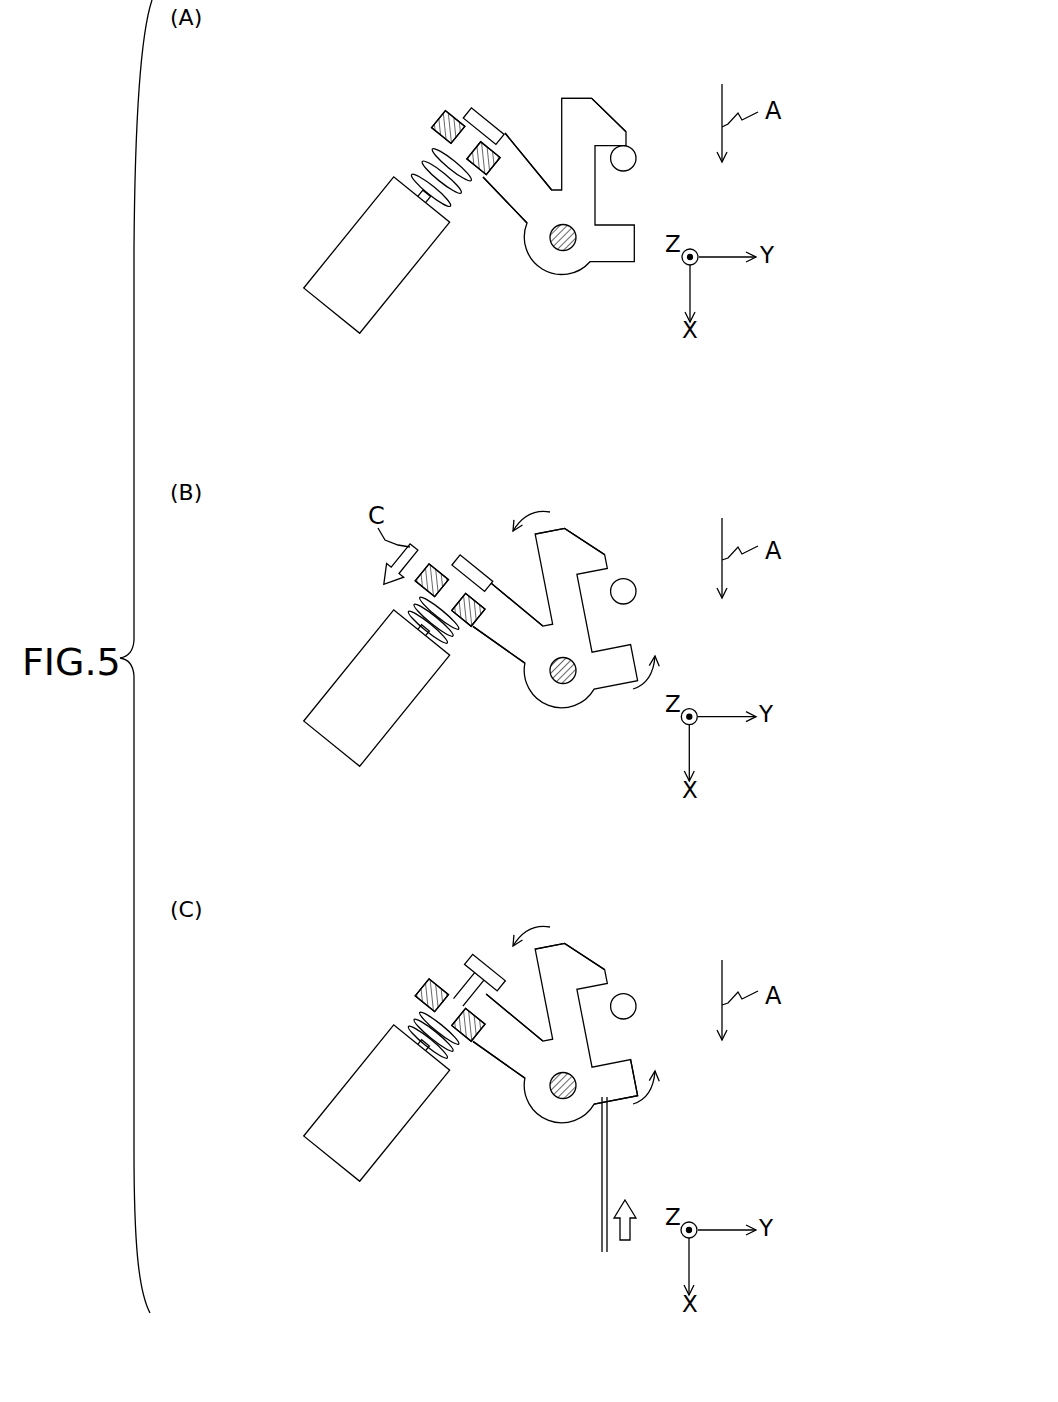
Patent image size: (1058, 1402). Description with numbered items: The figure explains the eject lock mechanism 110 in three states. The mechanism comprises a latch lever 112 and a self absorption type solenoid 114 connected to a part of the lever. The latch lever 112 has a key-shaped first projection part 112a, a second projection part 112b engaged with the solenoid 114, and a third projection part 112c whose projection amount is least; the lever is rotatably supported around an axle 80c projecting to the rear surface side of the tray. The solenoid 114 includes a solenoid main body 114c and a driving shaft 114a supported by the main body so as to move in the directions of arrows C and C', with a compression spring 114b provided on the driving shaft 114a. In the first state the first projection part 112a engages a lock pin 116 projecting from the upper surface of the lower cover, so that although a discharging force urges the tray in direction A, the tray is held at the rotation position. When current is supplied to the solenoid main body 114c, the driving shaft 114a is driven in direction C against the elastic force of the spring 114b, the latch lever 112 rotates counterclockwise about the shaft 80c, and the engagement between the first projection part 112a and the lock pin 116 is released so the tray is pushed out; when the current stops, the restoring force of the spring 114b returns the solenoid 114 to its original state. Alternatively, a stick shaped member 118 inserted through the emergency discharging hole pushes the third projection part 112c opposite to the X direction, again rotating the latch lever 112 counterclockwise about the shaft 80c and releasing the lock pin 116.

The eject lock mechanism 110 is at (352, 650).
The latch lever 112 is at (574, 632).
The key-shaped first projection part 112a is at (580, 98).
The second projection part 112b is at (522, 160).
The third projection part 112c is at (632, 1061).
The solenoid 114 is at (322, 301).
The driving shaft 114a is at (432, 117).
The compression spring 114b is at (415, 167).
The solenoid main body 114c is at (325, 262).
The lock pin 116 is at (637, 158).
The axle 80c is at (550, 240).
The stick shaped member 118 is at (608, 1174).